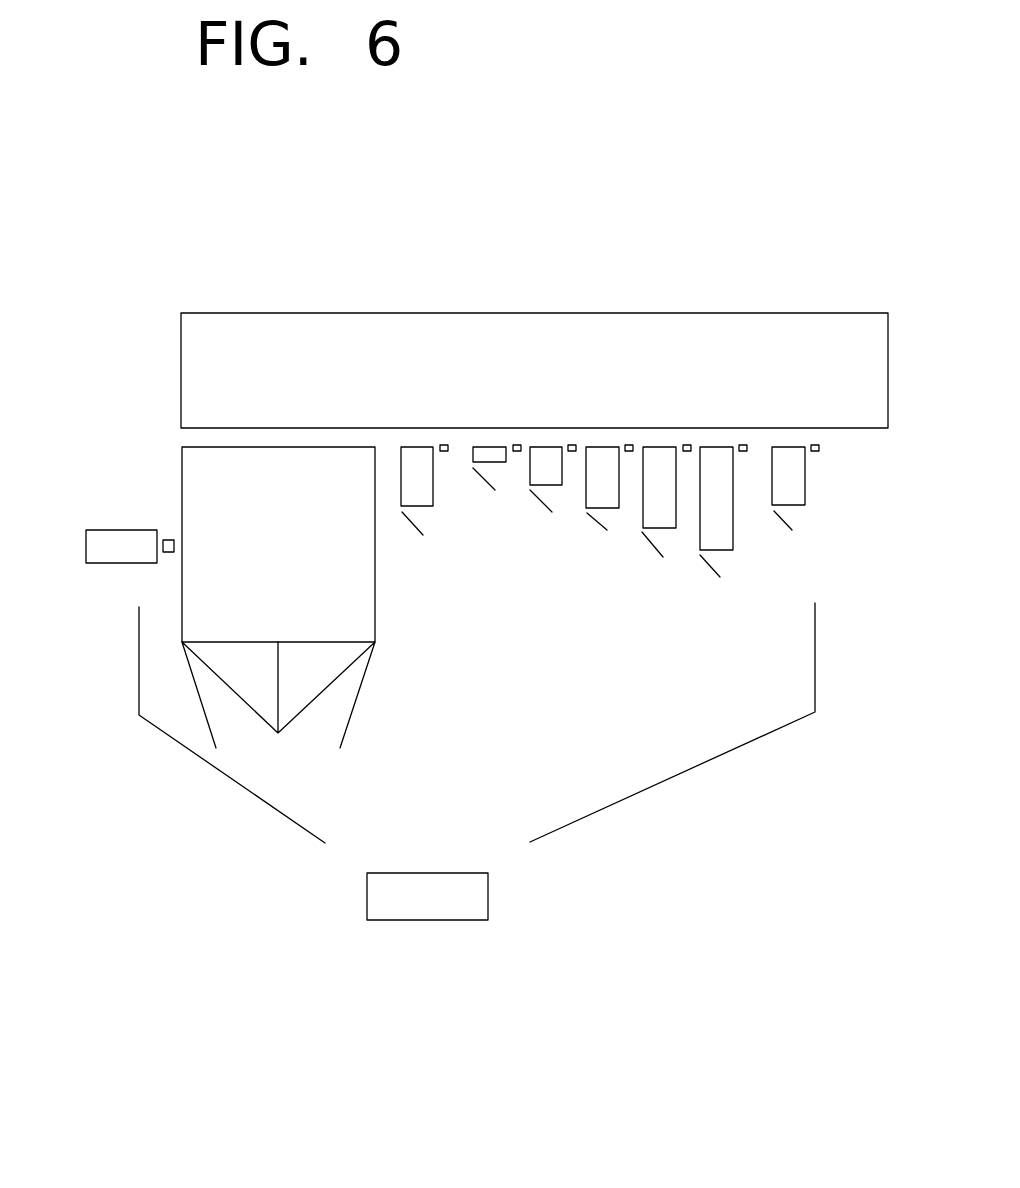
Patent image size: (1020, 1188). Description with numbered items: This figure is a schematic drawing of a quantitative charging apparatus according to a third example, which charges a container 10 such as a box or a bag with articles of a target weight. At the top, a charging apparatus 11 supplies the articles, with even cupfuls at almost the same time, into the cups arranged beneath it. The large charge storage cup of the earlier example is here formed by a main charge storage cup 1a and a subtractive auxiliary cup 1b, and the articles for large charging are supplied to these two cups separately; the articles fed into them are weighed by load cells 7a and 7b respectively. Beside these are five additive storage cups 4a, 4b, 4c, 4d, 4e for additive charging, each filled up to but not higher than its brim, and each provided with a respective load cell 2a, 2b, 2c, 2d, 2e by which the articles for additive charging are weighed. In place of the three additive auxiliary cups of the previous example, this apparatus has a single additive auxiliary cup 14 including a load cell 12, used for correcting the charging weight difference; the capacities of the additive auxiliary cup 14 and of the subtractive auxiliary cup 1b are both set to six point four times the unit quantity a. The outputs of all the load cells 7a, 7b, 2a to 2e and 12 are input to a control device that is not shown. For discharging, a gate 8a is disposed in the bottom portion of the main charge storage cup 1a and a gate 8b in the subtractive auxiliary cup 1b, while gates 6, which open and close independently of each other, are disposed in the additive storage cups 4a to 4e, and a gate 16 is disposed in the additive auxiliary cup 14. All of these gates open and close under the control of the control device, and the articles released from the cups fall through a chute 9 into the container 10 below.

The charging apparatus 11 is at (238, 330).
The main charge storage cup 1a is at (182, 462).
The subtractive auxiliary cup 1b is at (414, 447).
The load cell 7a is at (127, 563).
The load cell 7b is at (445, 445).
The load cell 2a is at (517, 443).
The load cell 2b is at (572, 443).
The load cell 2c is at (632, 443).
The load cell 2d is at (687, 443).
The load cell 2e is at (744, 443).
The load cell 12 is at (815, 443).
The additive storage cup 4a is at (477, 458).
The additive storage cup 4b is at (530, 485).
The additive storage cup 4c is at (587, 507).
The additive storage cup 4d is at (643, 528).
The additive storage cup 4e is at (733, 548).
The gate 6 is at (495, 491).
The gate 8a is at (206, 732).
The gate 8b is at (423, 535).
The additive auxiliary cup 14 is at (800, 470).
The gate 16 is at (792, 530).
The chute 9 is at (289, 821).
The container 10 is at (427, 920).